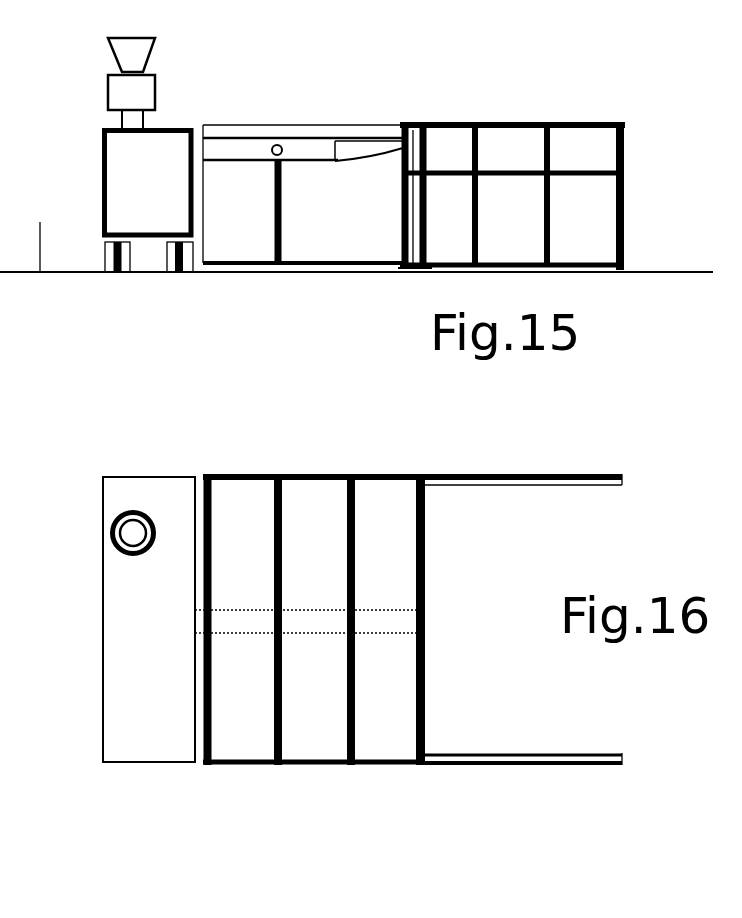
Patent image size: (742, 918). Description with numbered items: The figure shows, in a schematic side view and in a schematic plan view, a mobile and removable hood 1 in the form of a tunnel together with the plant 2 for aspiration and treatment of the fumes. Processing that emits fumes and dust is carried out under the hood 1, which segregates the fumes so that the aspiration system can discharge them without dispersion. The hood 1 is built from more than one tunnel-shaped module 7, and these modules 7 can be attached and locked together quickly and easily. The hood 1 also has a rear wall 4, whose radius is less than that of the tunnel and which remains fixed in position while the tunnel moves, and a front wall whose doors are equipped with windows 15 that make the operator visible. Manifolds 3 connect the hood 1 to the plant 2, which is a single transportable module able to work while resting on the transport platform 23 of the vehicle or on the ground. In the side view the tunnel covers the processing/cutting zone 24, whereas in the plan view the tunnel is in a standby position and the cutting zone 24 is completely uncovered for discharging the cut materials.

In FIG. 15, the hood 1 is at (423, 124).
In FIG. 15, the plant for aspiration and treatment of the fumes 2 is at (183, 138).
In FIG. 16, the plant for aspiration and treatment of the fumes 2 is at (177, 490).
In FIG. 15, the manifold 3 is at (292, 147).
In FIG. 15, the rear wall 4 is at (425, 262).
In FIG. 15, the windows 15 is at (622, 203).
In FIG. 15, the transport platform 23 is at (112, 274).
In FIG. 16, the module 7 is at (245, 485).
In FIG. 16, the processing/cutting zone 24 is at (598, 533).